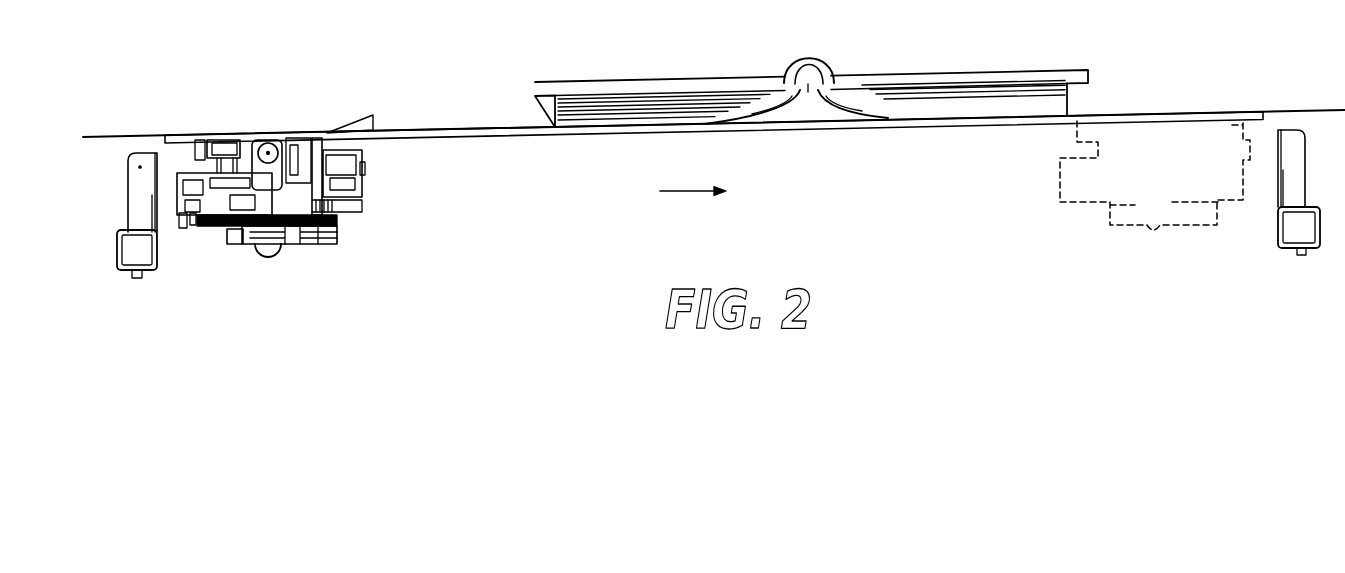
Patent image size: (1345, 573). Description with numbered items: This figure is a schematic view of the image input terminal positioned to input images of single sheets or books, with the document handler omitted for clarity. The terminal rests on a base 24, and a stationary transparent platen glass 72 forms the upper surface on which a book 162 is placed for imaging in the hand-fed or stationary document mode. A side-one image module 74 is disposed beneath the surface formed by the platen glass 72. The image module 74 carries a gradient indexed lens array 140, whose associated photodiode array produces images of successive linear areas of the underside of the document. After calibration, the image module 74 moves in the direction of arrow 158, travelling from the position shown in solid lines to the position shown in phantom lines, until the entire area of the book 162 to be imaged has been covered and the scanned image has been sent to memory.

The base 24 is at (128, 178).
The stationary transparent platen glass 72 is at (688, 128).
The side-one image module 74 is at (392, 186).
The gradient indexed lens array 140 is at (280, 145).
The arrow 158 is at (682, 191).
The book 162 is at (635, 78).